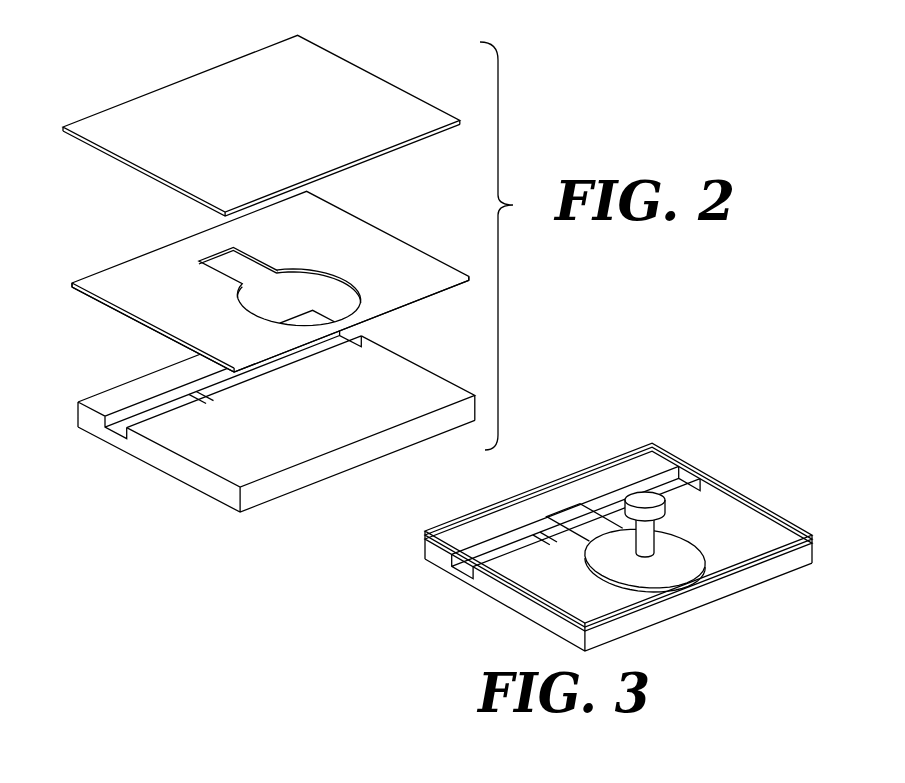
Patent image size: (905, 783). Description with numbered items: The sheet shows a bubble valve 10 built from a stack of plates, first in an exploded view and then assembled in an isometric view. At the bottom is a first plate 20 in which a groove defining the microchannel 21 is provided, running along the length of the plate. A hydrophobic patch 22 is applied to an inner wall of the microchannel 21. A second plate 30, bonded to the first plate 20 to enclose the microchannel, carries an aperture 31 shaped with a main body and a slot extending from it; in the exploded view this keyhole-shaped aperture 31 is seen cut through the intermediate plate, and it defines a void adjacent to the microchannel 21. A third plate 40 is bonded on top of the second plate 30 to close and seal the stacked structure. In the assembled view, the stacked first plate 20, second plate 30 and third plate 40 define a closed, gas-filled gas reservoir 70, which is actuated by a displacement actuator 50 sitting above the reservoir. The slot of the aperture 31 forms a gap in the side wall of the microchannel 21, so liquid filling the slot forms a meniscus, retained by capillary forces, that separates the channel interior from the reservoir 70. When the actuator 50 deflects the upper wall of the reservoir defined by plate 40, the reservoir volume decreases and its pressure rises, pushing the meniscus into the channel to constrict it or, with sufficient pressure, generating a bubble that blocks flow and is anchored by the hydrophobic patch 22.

In FIG. 2, the bubble valve 10 is at (126, 191).
In FIG. 2, the first plate 20 is at (412, 382).
In FIG. 3, the first plate 20 is at (750, 577).
In FIG. 2, the microchannel 21 is at (150, 418).
In FIG. 3, the microchannel 21 is at (463, 573).
In FIG. 2, the hydrophobic patch 22 is at (205, 392).
In FIG. 3, the hydrophobic patch 22 is at (545, 538).
In FIG. 2, the second plate 30 is at (373, 250).
In FIG. 3, the second plate 30 is at (680, 597).
In FIG. 2, the aperture 31 is at (268, 268).
In FIG. 2, the third plate 40 is at (405, 100).
In FIG. 3, the third plate 40 is at (730, 512).
In FIG. 3, the displacement actuator 50 is at (640, 497).
In FIG. 3, the gas reservoir 70 is at (673, 563).